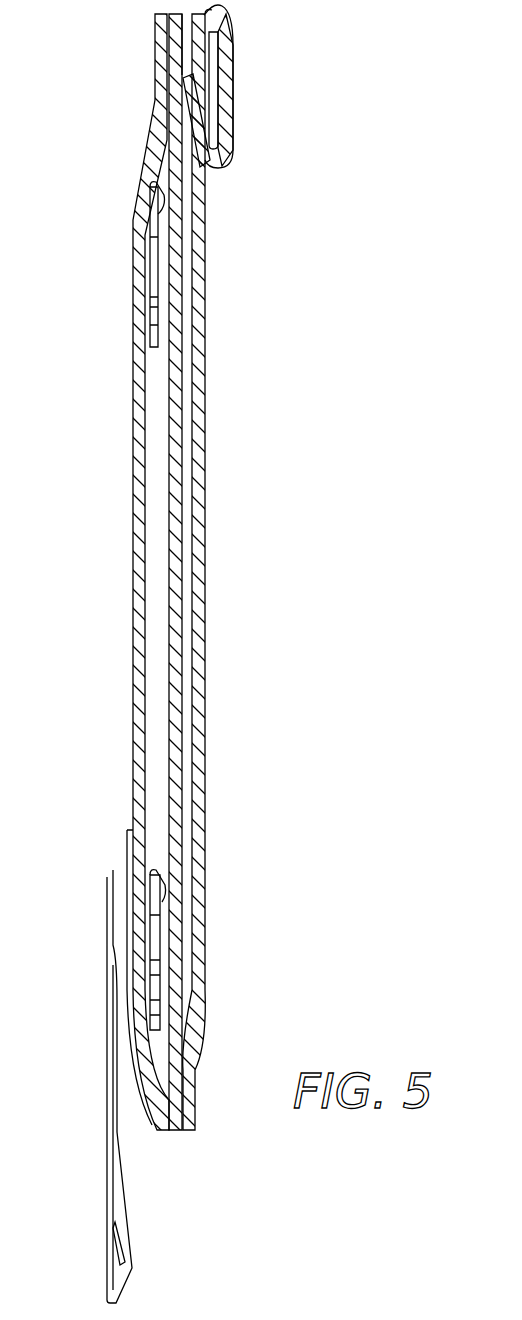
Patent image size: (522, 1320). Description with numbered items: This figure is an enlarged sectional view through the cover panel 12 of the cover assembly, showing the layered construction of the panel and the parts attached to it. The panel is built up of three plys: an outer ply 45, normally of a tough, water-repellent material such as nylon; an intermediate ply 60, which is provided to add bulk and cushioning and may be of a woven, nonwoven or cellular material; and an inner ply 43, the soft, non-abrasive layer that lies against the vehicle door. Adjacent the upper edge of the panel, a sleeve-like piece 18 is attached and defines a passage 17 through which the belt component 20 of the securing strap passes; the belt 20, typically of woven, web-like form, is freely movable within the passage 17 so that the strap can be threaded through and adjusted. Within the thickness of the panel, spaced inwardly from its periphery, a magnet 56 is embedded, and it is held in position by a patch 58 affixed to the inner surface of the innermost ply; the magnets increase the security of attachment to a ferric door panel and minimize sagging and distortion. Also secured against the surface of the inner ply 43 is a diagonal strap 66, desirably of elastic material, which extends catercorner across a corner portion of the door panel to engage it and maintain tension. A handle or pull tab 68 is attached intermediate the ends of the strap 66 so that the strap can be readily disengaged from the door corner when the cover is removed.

The cover panel 12 is at (173, 654).
The passage 17 is at (213, 27).
The sleeve-like piece 18 is at (230, 93).
The belt component 20 is at (178, 63).
The inner ply 43 is at (133, 556).
The outer ply 45 is at (197, 749).
The magnet 56 is at (158, 257).
The patch 58 is at (150, 310).
The intermediate ply 60 is at (175, 667).
The diagonal strap 66 is at (132, 838).
The pull tab 68 is at (107, 1098).